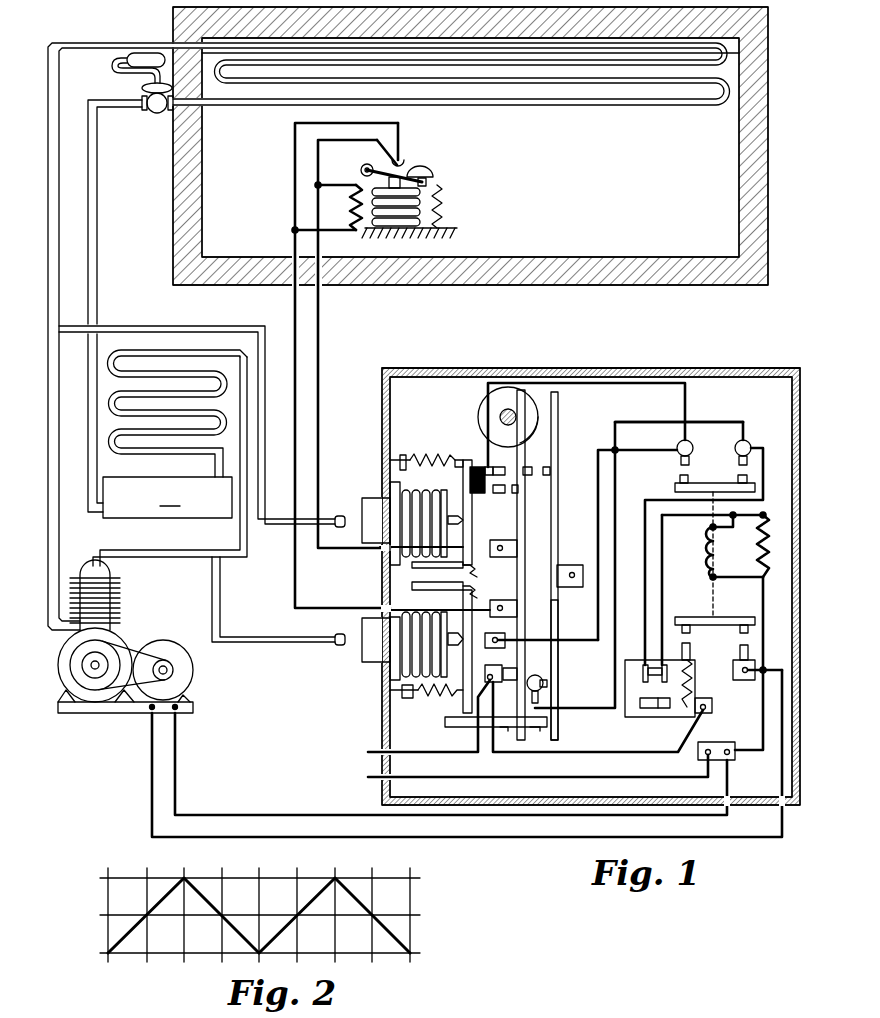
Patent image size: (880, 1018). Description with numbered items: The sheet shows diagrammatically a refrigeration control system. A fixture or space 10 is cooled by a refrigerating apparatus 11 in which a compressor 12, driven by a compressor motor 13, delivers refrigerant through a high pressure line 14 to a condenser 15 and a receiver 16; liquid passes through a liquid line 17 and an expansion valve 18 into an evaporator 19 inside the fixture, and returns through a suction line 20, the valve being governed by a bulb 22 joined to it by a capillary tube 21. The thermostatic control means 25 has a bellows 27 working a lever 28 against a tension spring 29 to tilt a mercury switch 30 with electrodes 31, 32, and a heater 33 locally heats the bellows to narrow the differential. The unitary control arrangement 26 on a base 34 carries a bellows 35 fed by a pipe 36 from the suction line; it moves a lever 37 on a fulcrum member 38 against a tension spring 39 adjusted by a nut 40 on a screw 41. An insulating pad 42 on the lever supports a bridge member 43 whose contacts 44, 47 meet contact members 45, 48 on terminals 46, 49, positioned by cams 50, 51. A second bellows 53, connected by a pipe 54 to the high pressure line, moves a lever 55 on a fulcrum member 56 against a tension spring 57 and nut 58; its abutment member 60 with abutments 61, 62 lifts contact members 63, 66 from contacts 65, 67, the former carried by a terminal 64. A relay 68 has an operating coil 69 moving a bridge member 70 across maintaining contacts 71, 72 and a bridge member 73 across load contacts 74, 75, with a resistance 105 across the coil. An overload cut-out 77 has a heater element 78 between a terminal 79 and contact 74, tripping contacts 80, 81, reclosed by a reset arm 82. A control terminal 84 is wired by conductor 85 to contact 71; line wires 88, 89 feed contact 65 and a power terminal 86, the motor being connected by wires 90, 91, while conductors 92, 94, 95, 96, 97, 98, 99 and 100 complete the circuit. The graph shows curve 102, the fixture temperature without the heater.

In FIG. 1, the fixture or space 10 is at (739, 167).
In FIG. 1, the refrigerating apparatus 11 is at (202, 689).
In FIG. 1, the compressor 12 is at (115, 599).
In FIG. 1, the compressor motor 13 is at (165, 650).
In FIG. 1, the high pressure line 14 is at (162, 555).
In FIG. 1, the condenser 15 is at (158, 354).
In FIG. 1, the receiver 16 is at (167, 497).
In FIG. 1, the liquid line 17 is at (97, 265).
In FIG. 1, the expansion valve 18 is at (157, 113).
In FIG. 1, the evaporator 19 is at (542, 104).
In FIG. 1, the low pressure or suction line 20 is at (50, 79).
In FIG. 1, the capillary tube 21 is at (132, 77).
In FIG. 1, the bulb 22 is at (150, 54).
In FIG. 1, the thermostatic control means 25 is at (471, 197).
In FIG. 1, the unitary control arrangement 26 is at (364, 729).
In FIG. 1, the bellows 27 is at (392, 201).
In FIG. 1, the lever 28 is at (430, 181).
In FIG. 1, the tension spring 29 is at (442, 211).
In FIG. 1, the mercury switch 30 is at (420, 163).
In FIG. 1, the electrode 31 is at (402, 142).
In FIG. 1, the electrode 32 is at (382, 151).
In FIG. 1, the heater 33 is at (350, 208).
In FIG. 1, the base 34 is at (382, 372).
In FIG. 1, the bellows 35 is at (410, 487).
In FIG. 1, the pipe 36 is at (128, 326).
In FIG. 1, the lever 37 is at (472, 527).
In FIG. 1, the fulcrum member 38 is at (415, 568).
In FIG. 1, the tension spring 39 is at (430, 455).
In FIG. 1, the nut 40 is at (402, 456).
In FIG. 1, the screw 41 is at (388, 464).
In FIG. 1, the insulating pad 42 is at (484, 495).
In FIG. 1, the bridge member 43 is at (484, 466).
In FIG. 1, the contact 44 is at (500, 494).
In FIG. 1, the contact member 45 is at (525, 508).
In FIG. 1, the terminal 46 is at (508, 557).
In FIG. 1, the contact 47 is at (503, 467).
In FIG. 1, the contact member 48 is at (558, 485).
In FIG. 1, the terminal 49 is at (560, 566).
In FIG. 1, the cam 50 is at (500, 413).
In FIG. 1, the cam 51 is at (543, 428).
In FIG. 1, the bellows 53 is at (428, 672).
In FIG. 1, the pipe 54 is at (214, 584).
In FIG. 1, the lever 55 is at (463, 664).
In FIG. 1, the fulcrum member 56 is at (426, 585).
In FIG. 1, the tension spring 57 is at (428, 698).
In FIG. 1, the nut 58 is at (402, 700).
In FIG. 1, the abutment member 60 is at (466, 728).
In FIG. 1, the abutment 61 is at (505, 735).
In FIG. 1, the abutment 62 is at (537, 735).
In FIG. 1, the contact member 63 is at (520, 702).
In FIG. 1, the terminal 64 is at (507, 600).
In FIG. 1, the contact 65 is at (495, 665).
In FIG. 1, the contact member 66 is at (558, 663).
In FIG. 1, the contact 67 is at (530, 676).
In FIG. 1, the relay or starter 68 is at (755, 415).
In FIG. 1, the operating coil 69 is at (704, 553).
In FIG. 1, the bridge member 70 is at (704, 484).
In FIG. 1, the maintaining contact 71 is at (677, 445).
In FIG. 1, the maintaining contact 72 is at (735, 446).
In FIG. 1, the bridge member 73 is at (705, 615).
In FIG. 1, the load contact 74 is at (690, 648).
In FIG. 1, the load contact 75 is at (736, 660).
In FIG. 1, the overload cut-out 77 is at (618, 726).
In FIG. 1, the heater element 78 is at (693, 683).
In FIG. 1, the terminal 79 is at (712, 707).
In FIG. 1, the contact 80 is at (644, 664).
In FIG. 1, the contact 81 is at (666, 664).
In FIG. 1, the reset arm 82 is at (658, 709).
In FIG. 1, the control terminal 84 is at (492, 633).
In FIG. 1, the conductor 85 is at (598, 513).
In FIG. 1, the power terminal 86 is at (718, 743).
In FIG. 1, the line wire 88 is at (368, 754).
In FIG. 1, the line wire 89 is at (368, 780).
In FIG. 1, the wire 90 is at (286, 837).
In FIG. 1, the wire 91 is at (286, 815).
In FIG. 1, the conductor 92 is at (600, 752).
In FIG. 1, the wire 94 is at (297, 588).
In FIG. 1, the wire 95 is at (320, 413).
In FIG. 1, the conductor 96 is at (615, 687).
In FIG. 1, the conductor 97 is at (764, 477).
In FIG. 1, the conductor 98 is at (663, 575).
In FIG. 1, the conductor 99 is at (763, 600).
In FIG. 1, the conductor 100 is at (596, 384).
In FIG. 1, the resistance 105 is at (757, 547).
In FIG. 2, the curve 102 is at (414, 930).